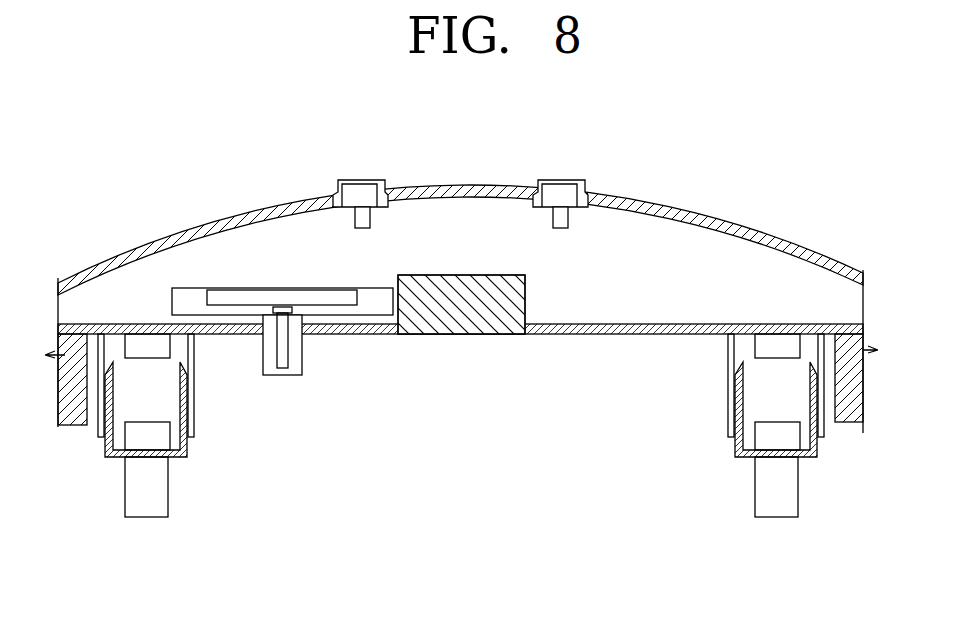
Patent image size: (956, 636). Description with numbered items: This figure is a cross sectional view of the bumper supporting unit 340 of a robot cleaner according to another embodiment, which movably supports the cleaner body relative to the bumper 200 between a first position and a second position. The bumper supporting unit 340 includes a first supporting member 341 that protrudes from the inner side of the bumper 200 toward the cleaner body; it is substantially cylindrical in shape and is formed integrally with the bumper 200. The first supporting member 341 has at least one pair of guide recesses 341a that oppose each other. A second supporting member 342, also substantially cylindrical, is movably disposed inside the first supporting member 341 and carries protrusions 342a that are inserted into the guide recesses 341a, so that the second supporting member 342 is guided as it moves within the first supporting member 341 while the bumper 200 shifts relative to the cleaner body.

The bumper 200 is at (676, 205).
The bumper supporting unit 340 is at (223, 347).
The first supporting member 341 is at (188, 310).
The second supporting member 342 is at (196, 322).
The guide recesses 341a is at (186, 348).
The protrusions 342a is at (203, 385).